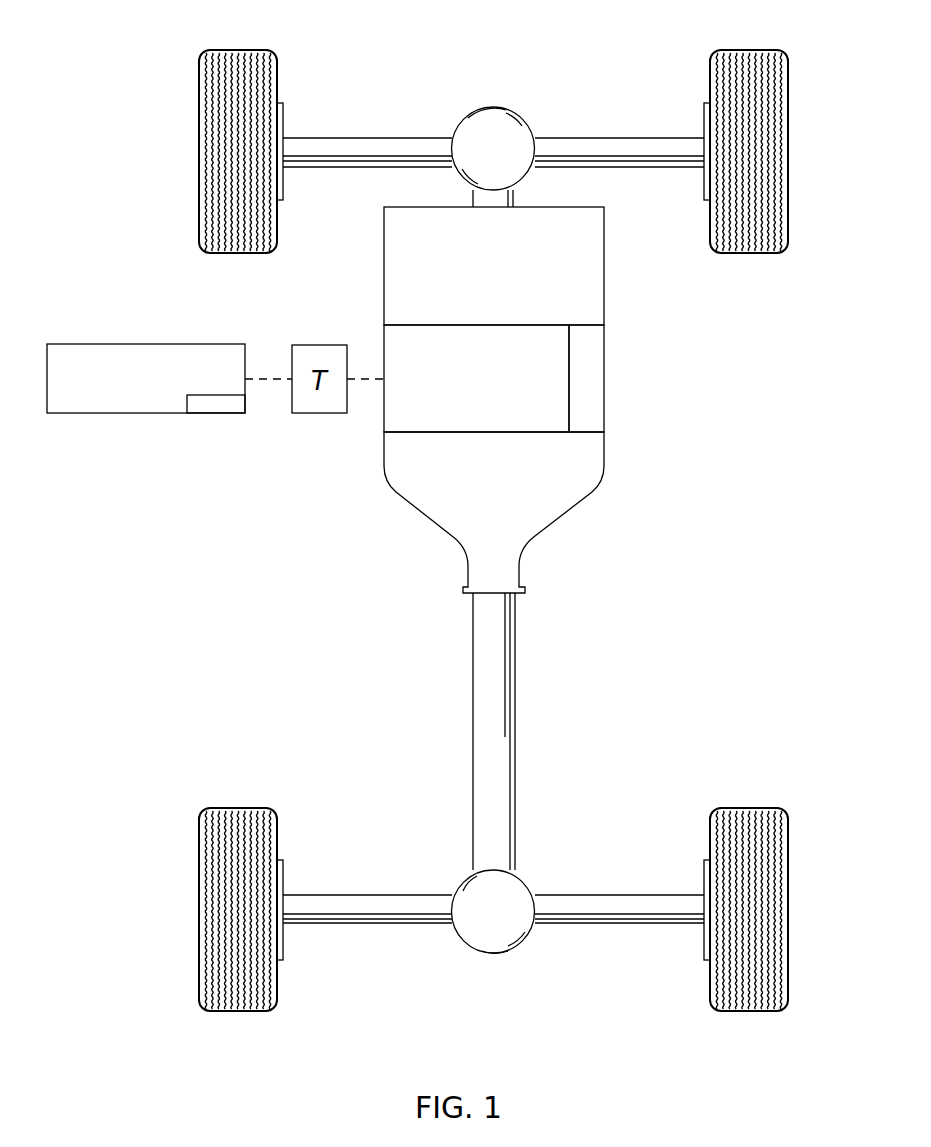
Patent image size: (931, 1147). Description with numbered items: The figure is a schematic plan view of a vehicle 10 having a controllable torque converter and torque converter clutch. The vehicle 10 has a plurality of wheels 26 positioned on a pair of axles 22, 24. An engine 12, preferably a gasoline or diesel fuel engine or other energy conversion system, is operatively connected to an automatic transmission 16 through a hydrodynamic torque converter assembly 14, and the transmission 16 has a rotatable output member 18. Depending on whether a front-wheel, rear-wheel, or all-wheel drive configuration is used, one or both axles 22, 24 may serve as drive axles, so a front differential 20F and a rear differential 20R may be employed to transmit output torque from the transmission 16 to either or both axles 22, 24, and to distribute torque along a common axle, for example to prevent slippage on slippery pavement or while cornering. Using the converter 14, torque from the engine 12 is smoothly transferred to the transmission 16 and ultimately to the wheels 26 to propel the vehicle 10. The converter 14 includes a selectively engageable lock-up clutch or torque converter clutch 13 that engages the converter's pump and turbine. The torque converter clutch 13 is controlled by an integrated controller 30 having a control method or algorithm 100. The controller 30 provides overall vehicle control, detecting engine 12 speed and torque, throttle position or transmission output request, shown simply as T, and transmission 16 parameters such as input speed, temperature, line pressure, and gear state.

The vehicle 10 is at (768, 465).
The engine 12 is at (604, 271).
The torque converter clutch 13 is at (604, 378).
The hydrodynamic torque converter assembly 14 is at (383, 408).
The automatic transmission 16 is at (604, 457).
The output member 18 is at (515, 732).
The front differential 20F is at (470, 130).
The rear differential 20R is at (470, 928).
The axle 22 is at (632, 137).
The axle 24 is at (632, 893).
The wheels 26 is at (198, 80).
The controller 30 is at (117, 414).
The control method 100 is at (228, 414).